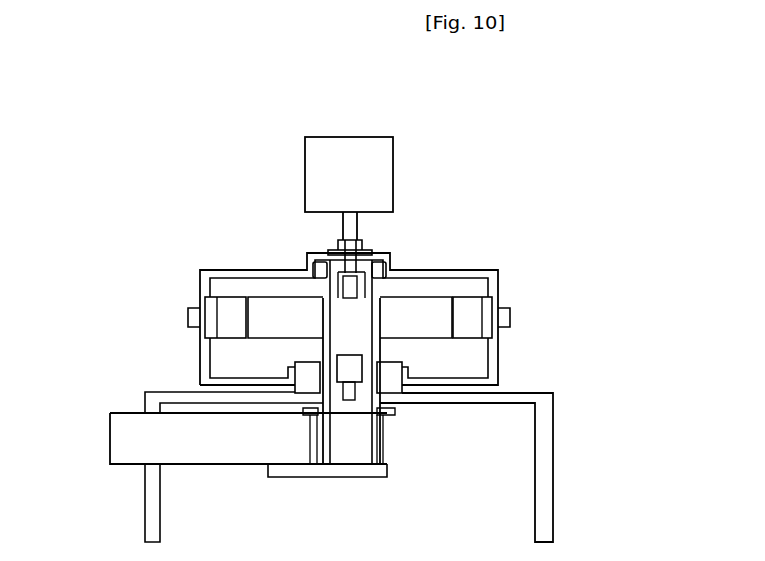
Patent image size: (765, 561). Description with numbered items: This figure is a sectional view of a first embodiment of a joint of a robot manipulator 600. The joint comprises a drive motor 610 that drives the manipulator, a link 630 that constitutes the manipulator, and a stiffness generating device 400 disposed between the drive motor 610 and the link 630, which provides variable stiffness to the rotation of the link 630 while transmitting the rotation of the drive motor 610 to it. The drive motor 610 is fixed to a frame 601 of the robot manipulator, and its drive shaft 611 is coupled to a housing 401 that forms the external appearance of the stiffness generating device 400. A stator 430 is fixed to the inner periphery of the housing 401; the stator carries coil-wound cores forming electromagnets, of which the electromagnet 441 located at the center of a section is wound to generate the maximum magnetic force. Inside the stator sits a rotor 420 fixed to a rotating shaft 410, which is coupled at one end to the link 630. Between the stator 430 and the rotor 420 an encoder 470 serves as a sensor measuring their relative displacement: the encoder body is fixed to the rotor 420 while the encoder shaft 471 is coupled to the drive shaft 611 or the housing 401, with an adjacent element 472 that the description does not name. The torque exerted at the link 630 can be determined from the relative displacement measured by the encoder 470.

The joint of a robot manipulator 600 is at (143, 116).
The drive motor 610 is at (348, 134).
The drive shaft 611 is at (341, 216).
The coupling flange 472 is at (400, 248).
The encoder 470 is at (440, 225).
The shaft of the encoder 471 is at (423, 268).
The stiffness generating device 400 is at (191, 269).
The housing 401 is at (515, 279).
The electromagnet 441 is at (223, 290).
The rotor 420 is at (270, 296).
The stator 430 is at (183, 297).
The rotating shaft 410 is at (392, 444).
The link 630 is at (130, 416).
The frame 601 is at (487, 437).